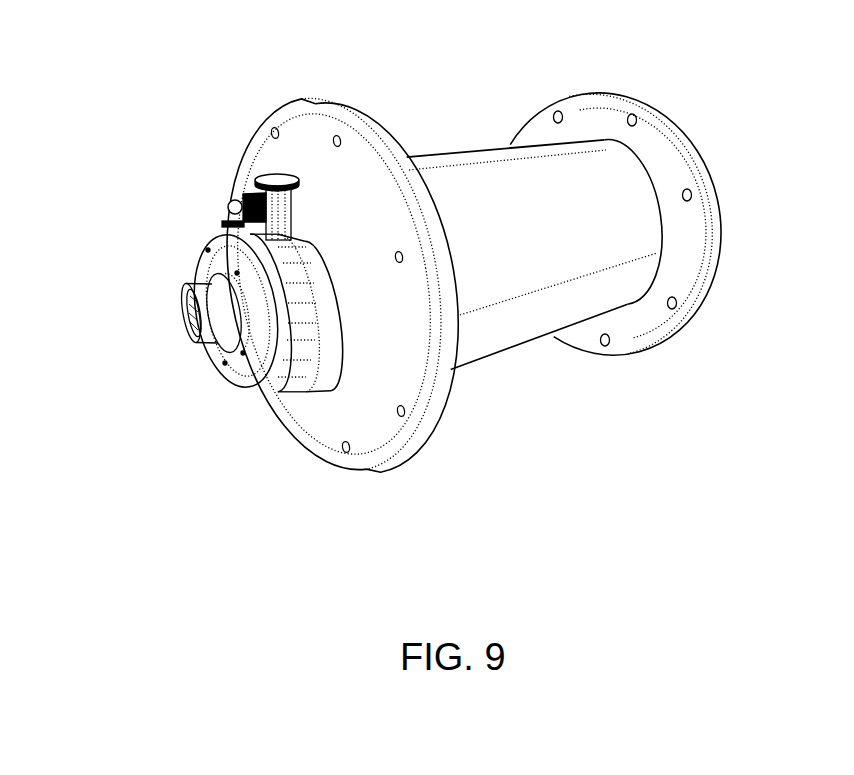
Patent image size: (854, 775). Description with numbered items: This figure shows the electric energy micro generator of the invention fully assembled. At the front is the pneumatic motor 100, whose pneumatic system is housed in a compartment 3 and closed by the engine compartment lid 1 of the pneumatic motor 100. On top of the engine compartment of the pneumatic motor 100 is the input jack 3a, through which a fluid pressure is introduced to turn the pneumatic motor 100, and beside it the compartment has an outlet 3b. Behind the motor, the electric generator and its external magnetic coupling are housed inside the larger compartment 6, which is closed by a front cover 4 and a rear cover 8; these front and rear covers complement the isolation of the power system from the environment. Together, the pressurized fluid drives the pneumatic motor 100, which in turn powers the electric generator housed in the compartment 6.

The pneumatic motor 100 is at (120, 279).
The engine compartment lid 1 is at (192, 313).
The compartment 3 is at (257, 397).
The input jack 3a is at (277, 172).
The outlet 3b is at (229, 197).
The front cover 4 is at (433, 427).
The compartment 6 is at (520, 348).
The rear cover 8 is at (689, 321).